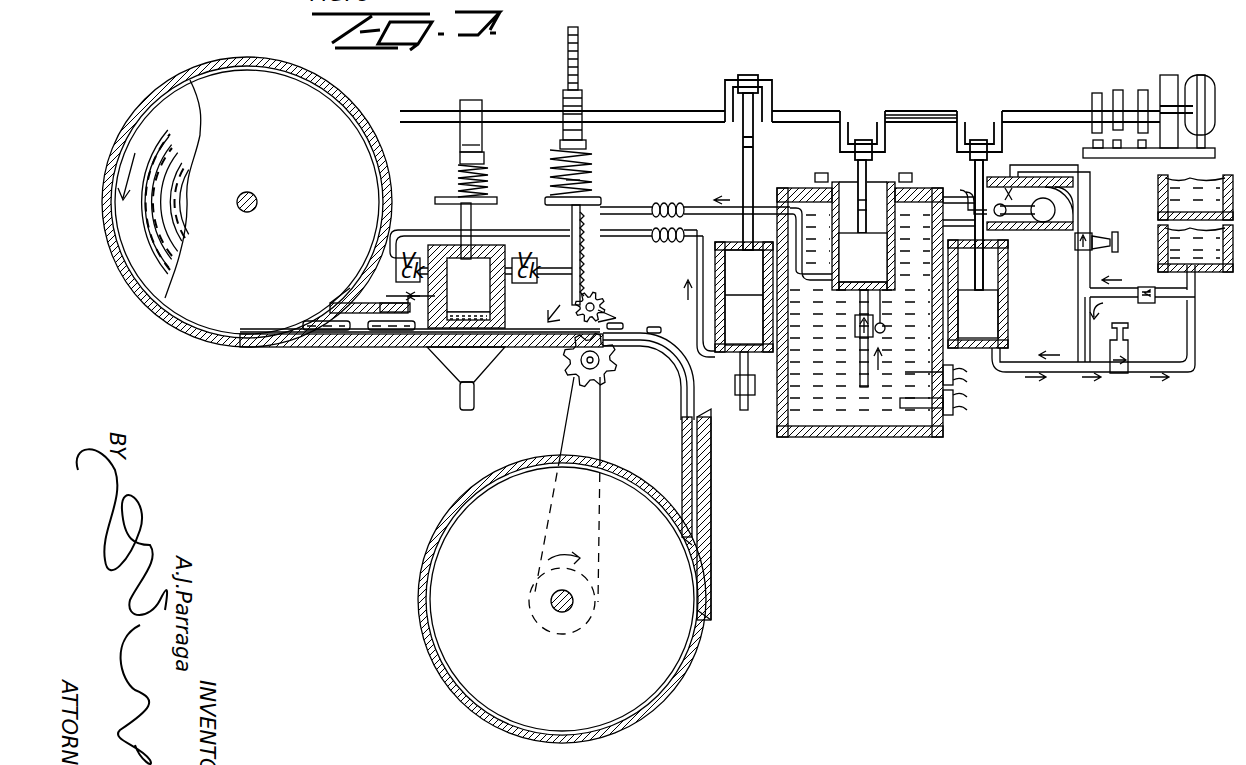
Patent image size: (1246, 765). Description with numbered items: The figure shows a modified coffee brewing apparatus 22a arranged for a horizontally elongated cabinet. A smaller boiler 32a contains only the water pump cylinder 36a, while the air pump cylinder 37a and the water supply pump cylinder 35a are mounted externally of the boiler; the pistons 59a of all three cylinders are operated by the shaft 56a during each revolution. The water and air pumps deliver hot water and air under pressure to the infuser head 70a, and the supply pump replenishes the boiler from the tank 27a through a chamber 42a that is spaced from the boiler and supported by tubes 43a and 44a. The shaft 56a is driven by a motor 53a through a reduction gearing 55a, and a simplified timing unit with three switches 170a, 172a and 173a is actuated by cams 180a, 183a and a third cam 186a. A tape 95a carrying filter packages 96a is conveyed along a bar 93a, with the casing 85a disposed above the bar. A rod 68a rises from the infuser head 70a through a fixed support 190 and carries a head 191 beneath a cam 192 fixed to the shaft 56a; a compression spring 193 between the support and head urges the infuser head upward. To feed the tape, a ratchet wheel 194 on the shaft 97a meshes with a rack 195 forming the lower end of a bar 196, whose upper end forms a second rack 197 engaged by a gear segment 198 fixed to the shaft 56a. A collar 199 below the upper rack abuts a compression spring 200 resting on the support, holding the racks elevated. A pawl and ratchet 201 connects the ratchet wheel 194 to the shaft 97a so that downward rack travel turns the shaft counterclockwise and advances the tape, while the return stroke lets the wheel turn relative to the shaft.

The casing 85a is at (232, 66).
The bar 93a is at (323, 348).
The tape 95a is at (365, 346).
The filter package 96a is at (319, 320).
The rod 68a is at (460, 216).
The infuser head 70a is at (492, 246).
The fixed support 190 is at (436, 197).
The head 191 is at (480, 153).
The cam 192 is at (482, 100).
The compression spring 193 is at (486, 192).
The ratchet wheel 194 is at (585, 300).
The rack 195 is at (604, 214).
The bar 196 is at (592, 170).
The second rack 197 is at (580, 62).
The gear segment 198 is at (583, 110).
The collar 199 is at (563, 142).
The compression spring 200 is at (578, 186).
The pawl and ratchet 201 is at (606, 318).
The shaft 97a is at (606, 308).
The apparatus 22a is at (812, 106).
The shaft 56a is at (918, 116).
The air pump cylinder 37a is at (730, 246).
The water pump cylinder 36a is at (900, 200).
The boiler 32a is at (872, 438).
The tube 44a is at (968, 190).
The chamber 42a is at (1075, 214).
The tube 43a is at (1005, 246).
The water supply pump cylinder 35a is at (1008, 306).
The piston 59a is at (990, 325).
The tank 27a is at (1158, 240).
The switch 170a is at (1168, 156).
The switch 172a is at (1118, 148).
The switch 173a is at (1095, 140).
The cam disc 186a is at (1095, 93).
The cam 183a is at (1118, 90).
The cam 180a is at (1143, 90).
The reduction gearing 55a is at (1169, 75).
The motor 53a is at (1215, 74).